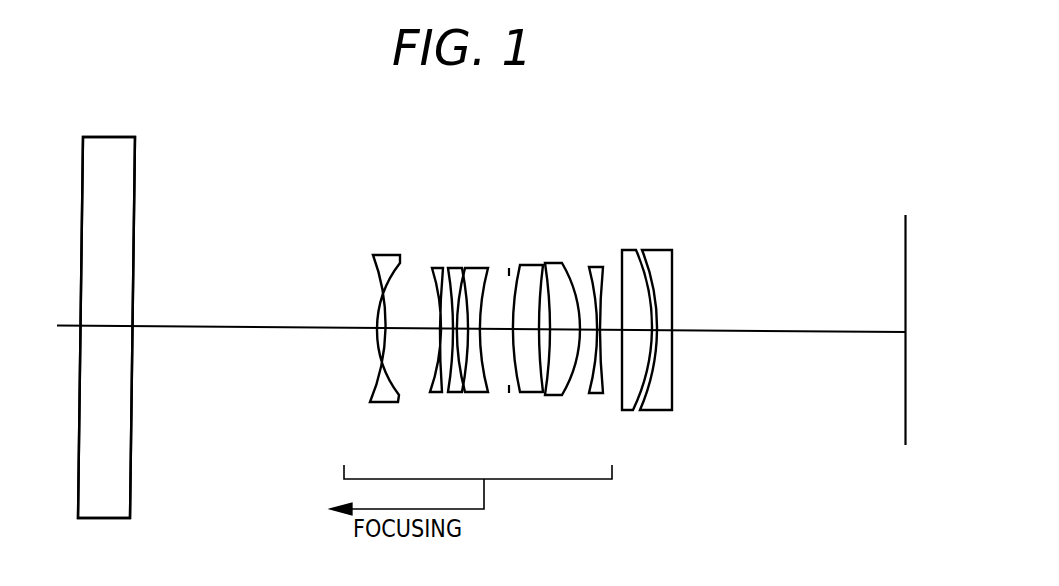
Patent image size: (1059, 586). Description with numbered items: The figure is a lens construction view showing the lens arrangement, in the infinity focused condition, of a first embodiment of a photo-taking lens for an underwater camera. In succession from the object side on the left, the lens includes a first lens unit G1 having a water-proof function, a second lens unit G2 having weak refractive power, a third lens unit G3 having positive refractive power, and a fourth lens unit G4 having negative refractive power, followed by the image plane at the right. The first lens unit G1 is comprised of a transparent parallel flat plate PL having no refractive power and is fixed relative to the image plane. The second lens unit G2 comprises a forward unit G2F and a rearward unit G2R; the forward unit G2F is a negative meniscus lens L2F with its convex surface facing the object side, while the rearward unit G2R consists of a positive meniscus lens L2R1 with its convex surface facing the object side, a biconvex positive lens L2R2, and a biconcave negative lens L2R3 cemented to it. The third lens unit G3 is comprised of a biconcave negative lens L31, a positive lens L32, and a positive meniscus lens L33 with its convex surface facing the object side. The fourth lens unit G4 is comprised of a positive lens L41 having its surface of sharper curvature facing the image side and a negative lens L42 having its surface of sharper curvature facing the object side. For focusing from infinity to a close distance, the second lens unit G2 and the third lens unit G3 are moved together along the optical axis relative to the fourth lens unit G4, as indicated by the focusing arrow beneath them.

The first lens unit G1 is at (107, 299).
The transparent parallel flat plate PL is at (120, 475).
The second lens unit G2 is at (418, 309).
The forward unit G2F is at (360, 313).
The rearward unit G2R is at (473, 338).
The third lens unit G3 is at (573, 343).
The fourth lens unit G4 is at (669, 337).
The negative meniscus lens L2F is at (368, 358).
The positive meniscus lens L2R1 is at (437, 375).
The biconvex positive lens L2R2 is at (455, 380).
The biconcave negative lens L2R3 is at (480, 385).
The biconcave negative lens L31 is at (533, 387).
The positive lens L32 is at (554, 385).
The positive meniscus lens L33 is at (595, 387).
The positive lens L41 is at (630, 395).
The negative lens L42 is at (658, 400).